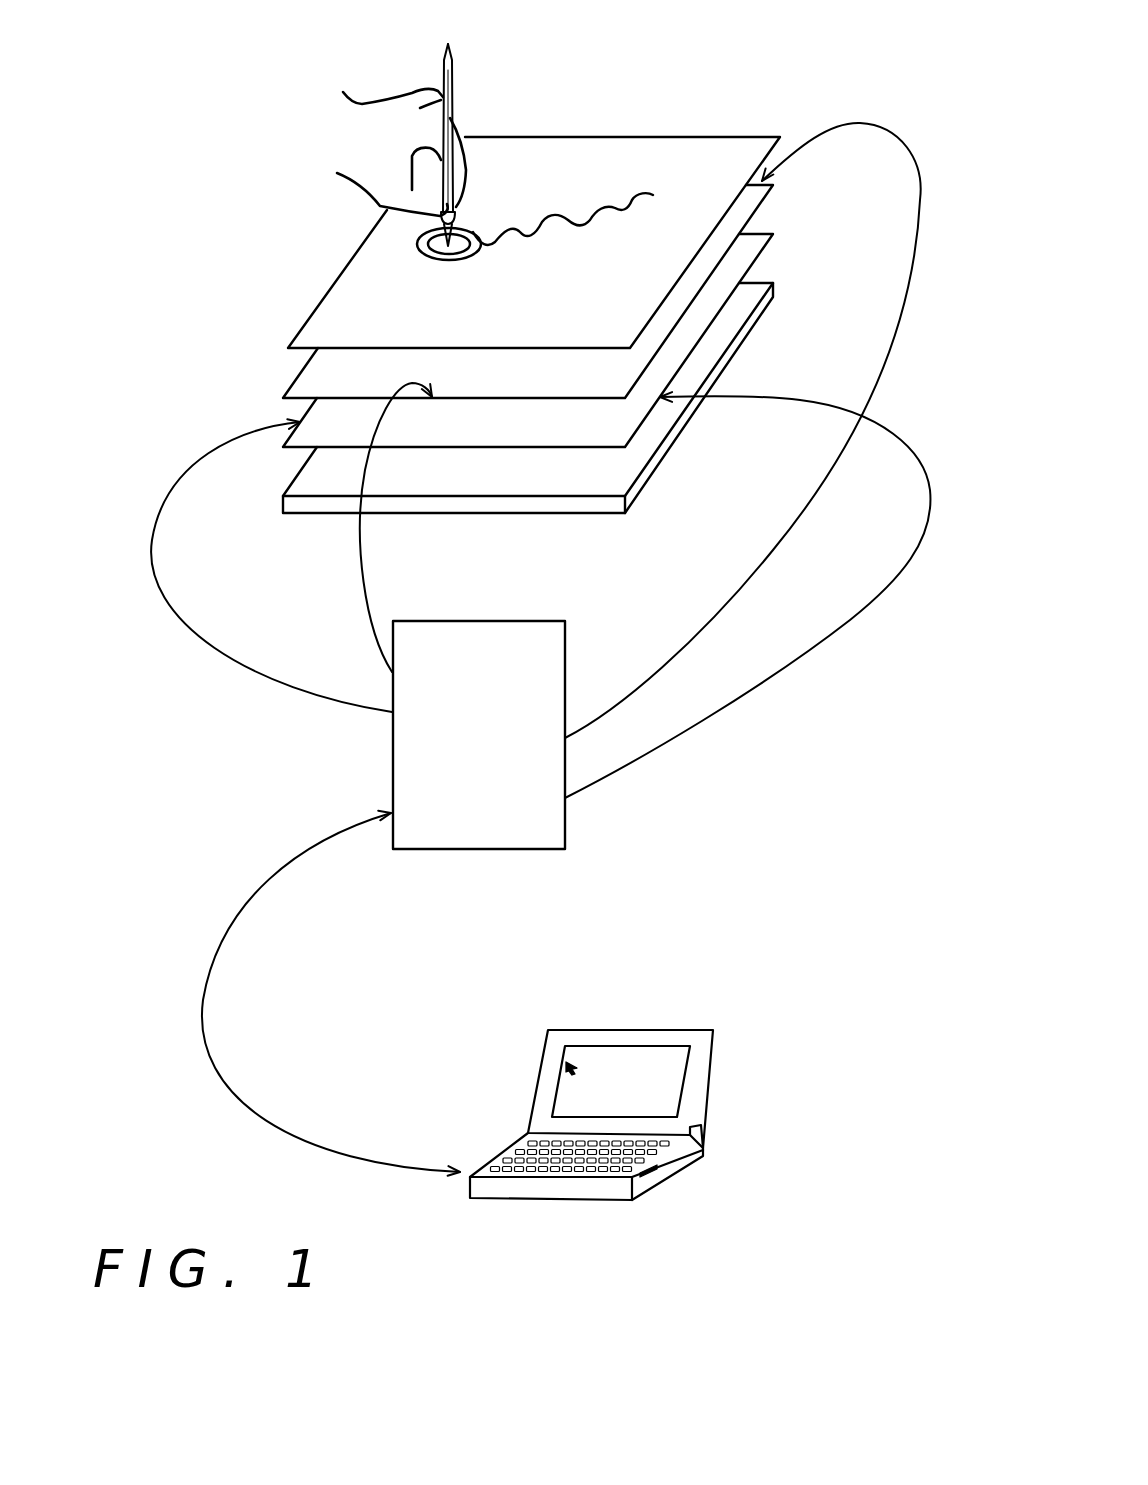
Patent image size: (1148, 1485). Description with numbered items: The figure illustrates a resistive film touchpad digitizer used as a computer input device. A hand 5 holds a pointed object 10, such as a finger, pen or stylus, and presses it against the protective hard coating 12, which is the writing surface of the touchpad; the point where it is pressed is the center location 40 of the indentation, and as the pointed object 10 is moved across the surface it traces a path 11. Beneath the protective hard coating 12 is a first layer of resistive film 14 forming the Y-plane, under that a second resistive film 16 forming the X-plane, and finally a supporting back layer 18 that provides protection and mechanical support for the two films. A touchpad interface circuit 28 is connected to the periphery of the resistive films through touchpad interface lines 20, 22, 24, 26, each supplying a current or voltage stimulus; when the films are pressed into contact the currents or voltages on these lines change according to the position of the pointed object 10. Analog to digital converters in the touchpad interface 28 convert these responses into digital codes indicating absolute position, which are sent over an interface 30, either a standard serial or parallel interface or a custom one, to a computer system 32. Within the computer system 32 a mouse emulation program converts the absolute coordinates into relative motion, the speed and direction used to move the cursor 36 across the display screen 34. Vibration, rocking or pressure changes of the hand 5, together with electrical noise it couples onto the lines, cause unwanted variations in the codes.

The hand 5 is at (357, 132).
The pointed object 10 is at (453, 52).
The path 11 is at (603, 193).
The protective hard coating 12 is at (367, 250).
The Y-plane resistive film 14 is at (313, 372).
The X-plane resistive film 16 is at (757, 243).
The supporting back layer 18 is at (632, 493).
The touchpad interface line 20 is at (360, 580).
The touchpad interface line 22 is at (917, 163).
The touchpad interface line 24 is at (178, 467).
The touchpad interface line 26 is at (782, 403).
The touchpad interface circuit 28 is at (565, 817).
The interface 30 is at (263, 893).
The computer system 32 is at (457, 1185).
The display screen 34 is at (558, 1066).
The cursor 36 is at (573, 1063).
The center location of the indentation 40 is at (473, 233).